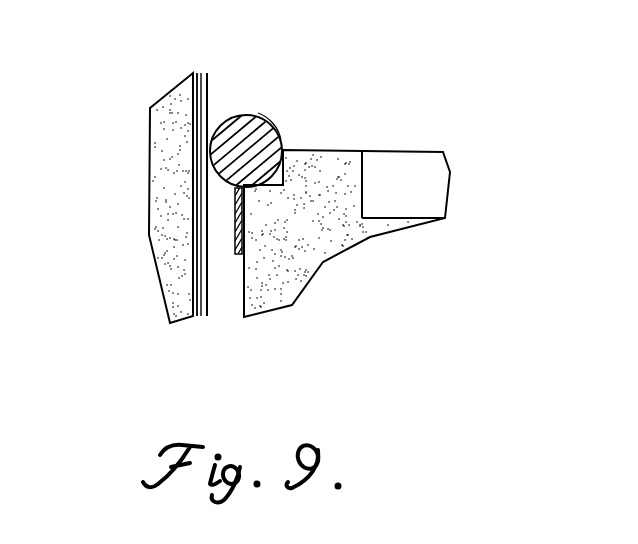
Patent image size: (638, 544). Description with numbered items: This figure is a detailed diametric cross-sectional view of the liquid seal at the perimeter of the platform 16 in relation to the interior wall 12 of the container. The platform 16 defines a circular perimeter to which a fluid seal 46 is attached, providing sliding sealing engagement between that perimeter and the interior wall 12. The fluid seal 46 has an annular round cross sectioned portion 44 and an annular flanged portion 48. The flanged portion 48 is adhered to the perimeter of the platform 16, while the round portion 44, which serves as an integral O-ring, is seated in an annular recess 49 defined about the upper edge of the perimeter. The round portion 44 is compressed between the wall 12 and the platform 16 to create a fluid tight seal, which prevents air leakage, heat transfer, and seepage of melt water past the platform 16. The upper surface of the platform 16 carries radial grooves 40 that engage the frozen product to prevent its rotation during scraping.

The interior wall 12 is at (165, 153).
The platform 16 is at (243, 313).
The radial grooves 40 is at (362, 195).
The annular round cross sectioned portion 44 is at (258, 115).
The fluid seal 46 is at (278, 128).
The annular flanged portion 48 is at (236, 245).
The annular recess 49 is at (236, 197).